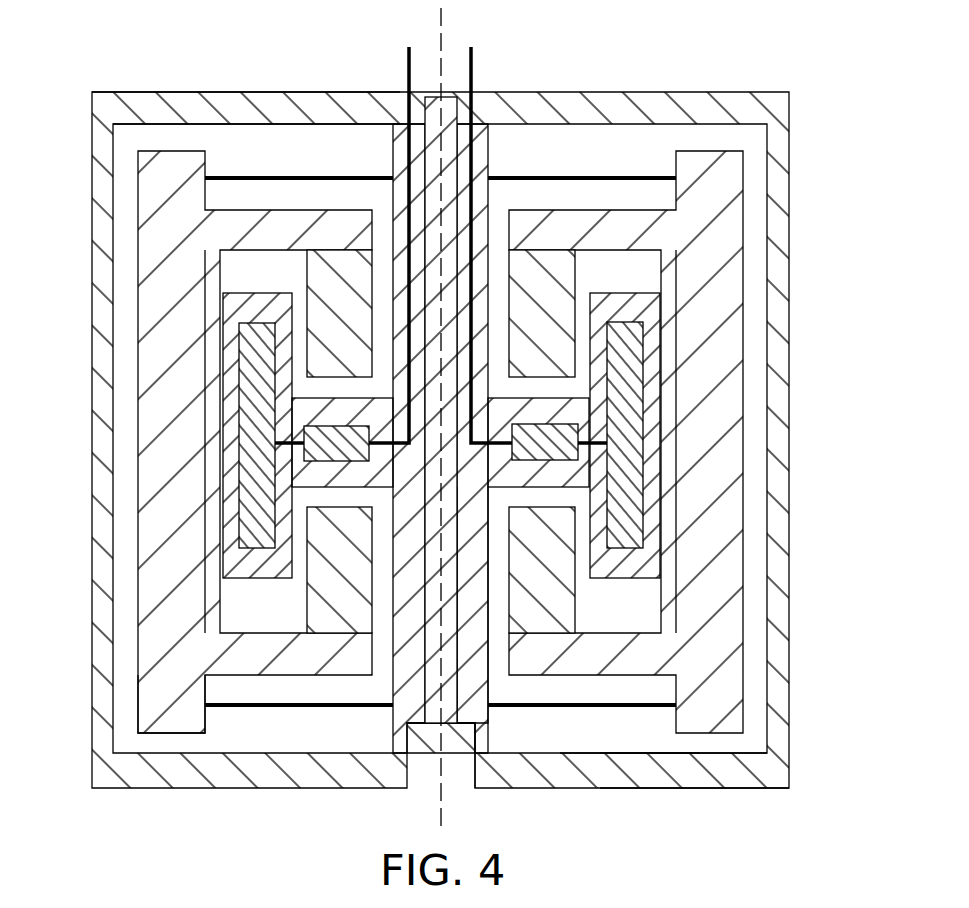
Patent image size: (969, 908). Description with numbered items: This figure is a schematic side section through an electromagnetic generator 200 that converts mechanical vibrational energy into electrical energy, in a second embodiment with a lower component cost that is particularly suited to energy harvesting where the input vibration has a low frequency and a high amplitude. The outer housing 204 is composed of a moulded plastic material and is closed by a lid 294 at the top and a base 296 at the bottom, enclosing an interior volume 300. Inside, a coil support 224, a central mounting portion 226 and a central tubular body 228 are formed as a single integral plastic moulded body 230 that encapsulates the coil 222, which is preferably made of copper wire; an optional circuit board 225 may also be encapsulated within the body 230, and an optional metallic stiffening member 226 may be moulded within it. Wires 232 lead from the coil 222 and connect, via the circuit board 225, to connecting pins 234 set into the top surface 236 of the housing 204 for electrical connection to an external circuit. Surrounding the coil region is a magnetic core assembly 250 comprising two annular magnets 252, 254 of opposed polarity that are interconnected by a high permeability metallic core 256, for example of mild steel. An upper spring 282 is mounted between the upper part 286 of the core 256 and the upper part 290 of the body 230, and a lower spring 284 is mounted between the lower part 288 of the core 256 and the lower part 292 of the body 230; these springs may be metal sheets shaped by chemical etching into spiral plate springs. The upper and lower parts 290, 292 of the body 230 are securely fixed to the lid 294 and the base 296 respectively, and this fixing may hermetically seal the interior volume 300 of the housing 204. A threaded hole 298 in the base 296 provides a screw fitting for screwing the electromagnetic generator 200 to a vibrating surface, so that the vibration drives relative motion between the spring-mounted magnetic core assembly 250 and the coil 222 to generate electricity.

The electromagnetic generator 200 is at (728, 66).
The outer housing 204 is at (785, 162).
The coil 222 is at (637, 337).
The coil support 224 is at (623, 303).
The circuit board 225 is at (320, 458).
The central mounting portion 226 is at (337, 410).
The central tubular body 228 is at (490, 725).
The single integral plastic moulded body 230 is at (545, 468).
The wires 232 is at (489, 150).
The connecting pins 234 is at (474, 63).
The top surface 236 is at (433, 92).
The magnetic core assembly 250 is at (568, 611).
The annular magnet 252 is at (318, 272).
The annular magnet 254 is at (318, 590).
The high permeability metallic core 256 is at (735, 550).
The upper spring 282 is at (265, 177).
The lower spring 284 is at (267, 707).
The upper part of the core 286 is at (145, 167).
The lower part of the core 288 is at (145, 722).
The upper part of the body 290 is at (392, 152).
The lower part of the body 292 is at (491, 587).
The lid 294 is at (208, 103).
The base 296 is at (758, 778).
The threaded hole 298 is at (472, 778).
The interior volume 300 is at (620, 741).